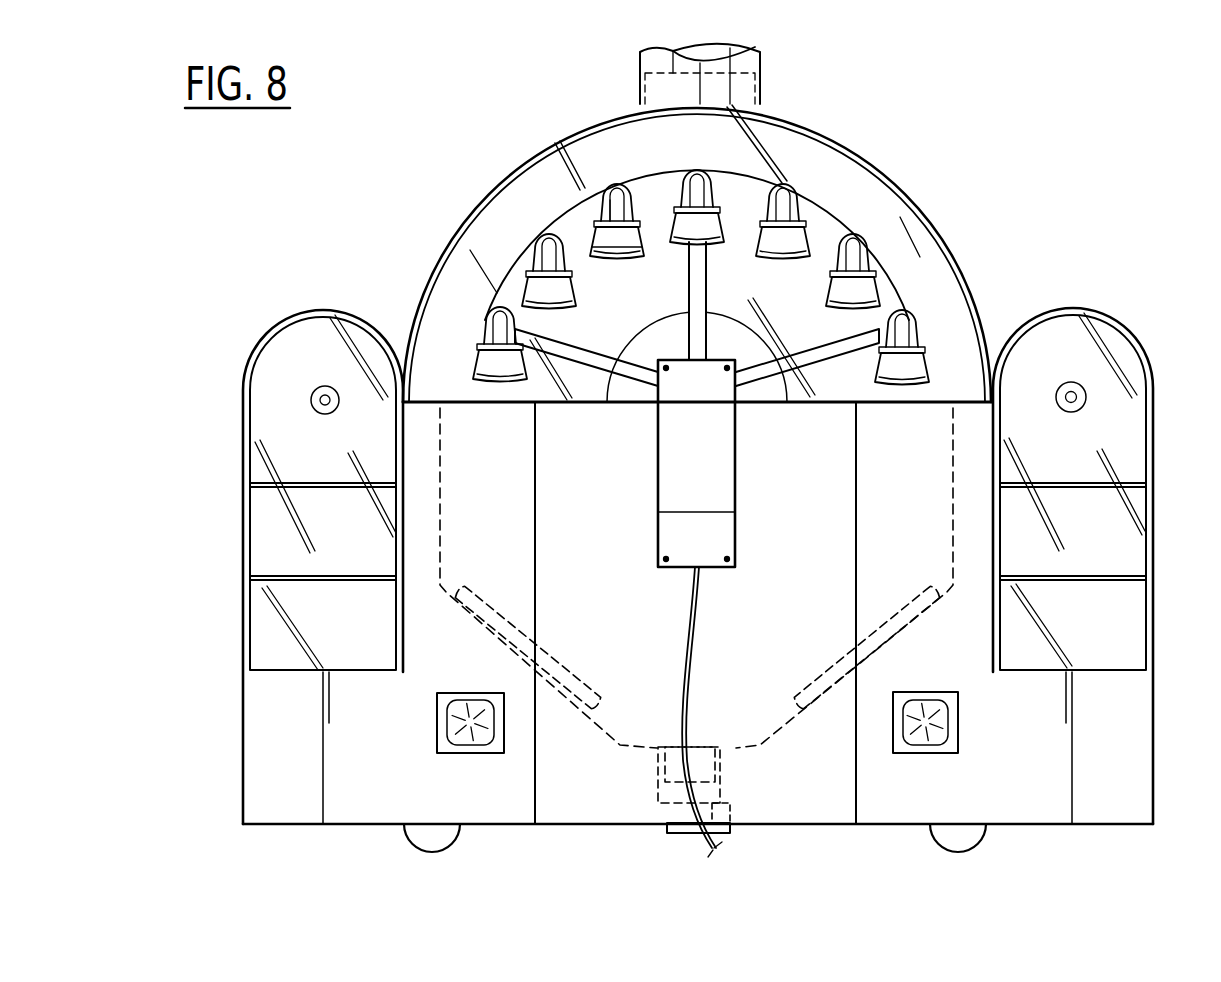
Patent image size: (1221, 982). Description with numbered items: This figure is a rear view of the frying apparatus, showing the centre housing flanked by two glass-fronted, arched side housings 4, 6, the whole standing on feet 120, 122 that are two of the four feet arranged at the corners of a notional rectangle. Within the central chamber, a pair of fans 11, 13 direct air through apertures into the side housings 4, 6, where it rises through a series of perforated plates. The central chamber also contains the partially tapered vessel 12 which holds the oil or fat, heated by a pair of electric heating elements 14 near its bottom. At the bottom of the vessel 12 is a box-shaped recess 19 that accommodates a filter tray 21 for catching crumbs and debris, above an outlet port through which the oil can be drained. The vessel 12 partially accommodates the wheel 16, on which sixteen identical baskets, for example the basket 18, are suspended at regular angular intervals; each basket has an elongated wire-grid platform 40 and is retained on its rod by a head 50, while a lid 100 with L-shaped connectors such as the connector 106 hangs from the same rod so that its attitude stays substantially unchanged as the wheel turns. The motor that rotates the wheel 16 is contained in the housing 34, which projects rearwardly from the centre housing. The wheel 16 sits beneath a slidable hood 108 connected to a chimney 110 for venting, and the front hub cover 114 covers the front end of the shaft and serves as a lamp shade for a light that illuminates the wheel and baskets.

The side housing 4 is at (1138, 337).
The side housing 6 is at (262, 340).
The fan 11 is at (927, 725).
The vessel 12 is at (470, 640).
The fan 13 is at (462, 722).
The electric heating elements 14 is at (568, 670).
The wheel 16 is at (830, 214).
The basket 18 is at (613, 260).
The box-shaped recess 19 is at (720, 788).
The filter tray 21 is at (676, 745).
The housing 34 is at (722, 477).
The platform 40 is at (641, 257).
The head 50 is at (620, 192).
The lid 100 is at (633, 212).
The L-shaped connector 106 is at (603, 206).
The hood 108 is at (943, 218).
The chimney 110 is at (640, 74).
The front hub cover 114 is at (670, 333).
The foot 120 is at (427, 841).
The foot 122 is at (968, 840).